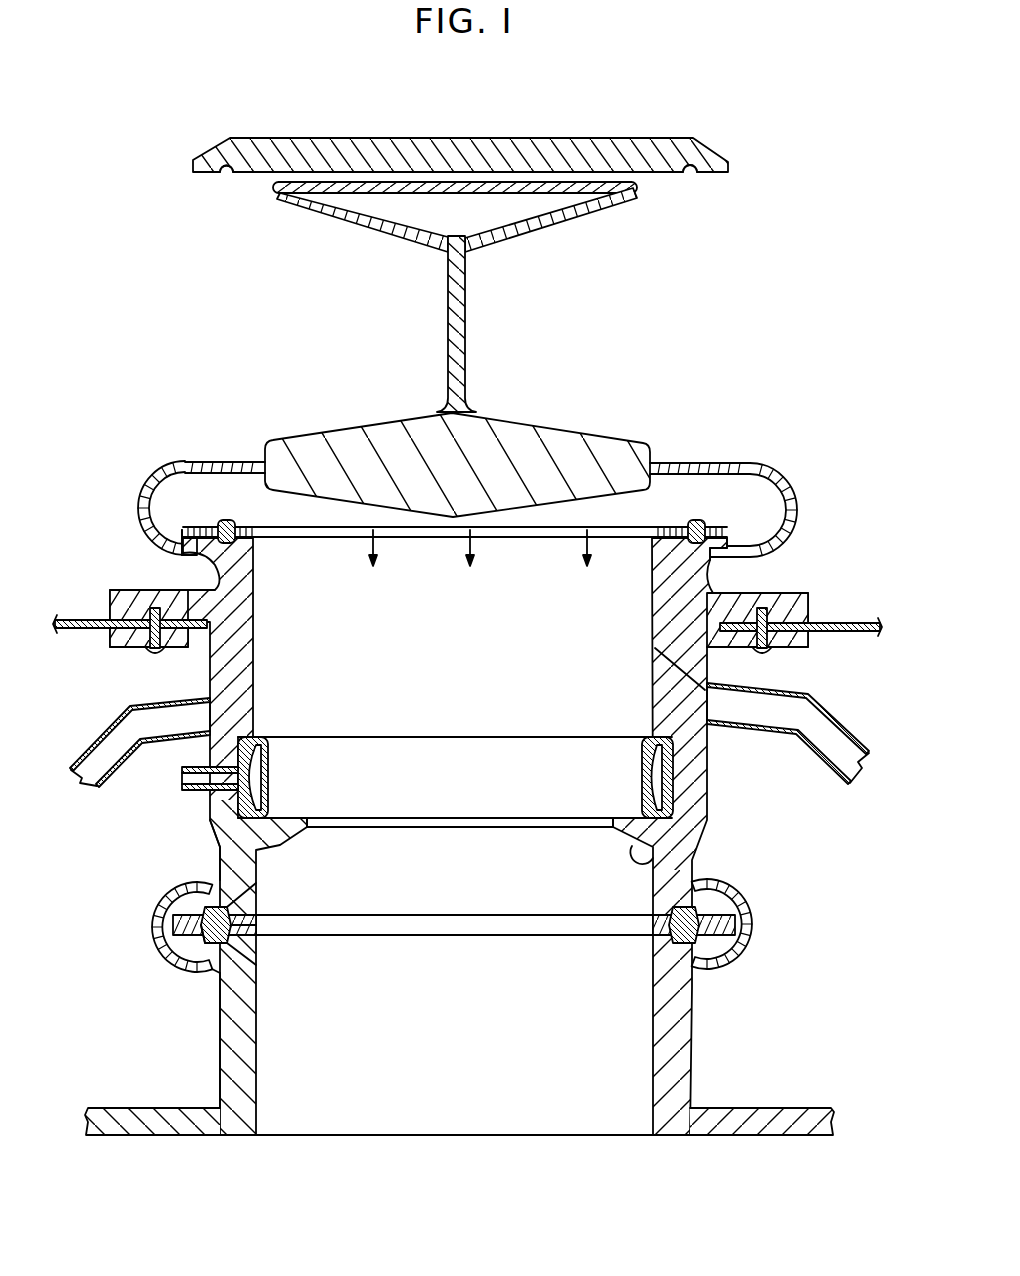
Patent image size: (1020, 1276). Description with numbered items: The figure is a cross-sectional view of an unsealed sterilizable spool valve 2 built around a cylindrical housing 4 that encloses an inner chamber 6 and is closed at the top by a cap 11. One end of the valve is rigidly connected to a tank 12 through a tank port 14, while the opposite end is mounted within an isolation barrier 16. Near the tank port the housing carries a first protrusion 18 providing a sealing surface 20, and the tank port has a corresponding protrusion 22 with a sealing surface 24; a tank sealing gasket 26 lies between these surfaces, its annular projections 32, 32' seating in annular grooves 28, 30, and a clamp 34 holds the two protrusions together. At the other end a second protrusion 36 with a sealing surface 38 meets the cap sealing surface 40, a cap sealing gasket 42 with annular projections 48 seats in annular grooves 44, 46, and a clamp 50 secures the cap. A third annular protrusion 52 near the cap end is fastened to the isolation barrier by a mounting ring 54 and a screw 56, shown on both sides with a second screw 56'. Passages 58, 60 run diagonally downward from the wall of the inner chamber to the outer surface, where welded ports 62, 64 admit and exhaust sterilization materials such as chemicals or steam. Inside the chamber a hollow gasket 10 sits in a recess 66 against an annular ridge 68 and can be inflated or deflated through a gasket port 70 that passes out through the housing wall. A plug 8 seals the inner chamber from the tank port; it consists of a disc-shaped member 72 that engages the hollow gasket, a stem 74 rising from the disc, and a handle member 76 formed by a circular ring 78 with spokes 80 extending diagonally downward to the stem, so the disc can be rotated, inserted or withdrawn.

The spool valve 2 is at (757, 455).
The cylindrical housing 4 is at (707, 825).
The inner chamber 6 is at (332, 592).
The plug 8 is at (484, 366).
The hollow gasket 10 is at (265, 738).
The cap 11 is at (693, 140).
The tank 12 is at (768, 1102).
The tank port 14 is at (221, 1043).
The isolation barrier 16 is at (86, 620).
The first protrusion 18 is at (208, 880).
The sealing surface 20 is at (257, 912).
The protrusion 22 is at (197, 975).
The sealing surface 24 is at (248, 945).
The tank sealing gasket 26 is at (655, 918).
The annular groove 28 is at (240, 903).
The annular groove 30 is at (222, 940).
The annular projection 32 is at (175, 924).
The annular projection 32' is at (148, 950).
The clamp 34 is at (158, 895).
The second protrusion 36 is at (182, 530).
The sealing surface 38 is at (270, 530).
The cap sealing surface 40 is at (705, 172).
The cap sealing gasket 42 is at (244, 530).
The annular groove 44 is at (722, 545).
The annular groove 46 is at (704, 160).
The annular projection 48 is at (227, 522).
The clamp 50 is at (158, 478).
The third annular protrusion 52 is at (130, 590).
The mounting ring 54 is at (112, 640).
The screw 56 is at (780, 662).
The screw 56' is at (120, 668).
The passage 58 is at (247, 693).
The passage 60 is at (707, 675).
The port 62 is at (833, 733).
The port 64 is at (101, 749).
The recess 66 is at (673, 767).
The annular ridge 68 is at (690, 857).
The gasket port 70 is at (181, 776).
The disc-shaped member 72 is at (597, 432).
The stem 74 is at (448, 322).
The handle member 76 is at (580, 212).
The circular ring 78 is at (523, 183).
The spokes 80 is at (363, 227).